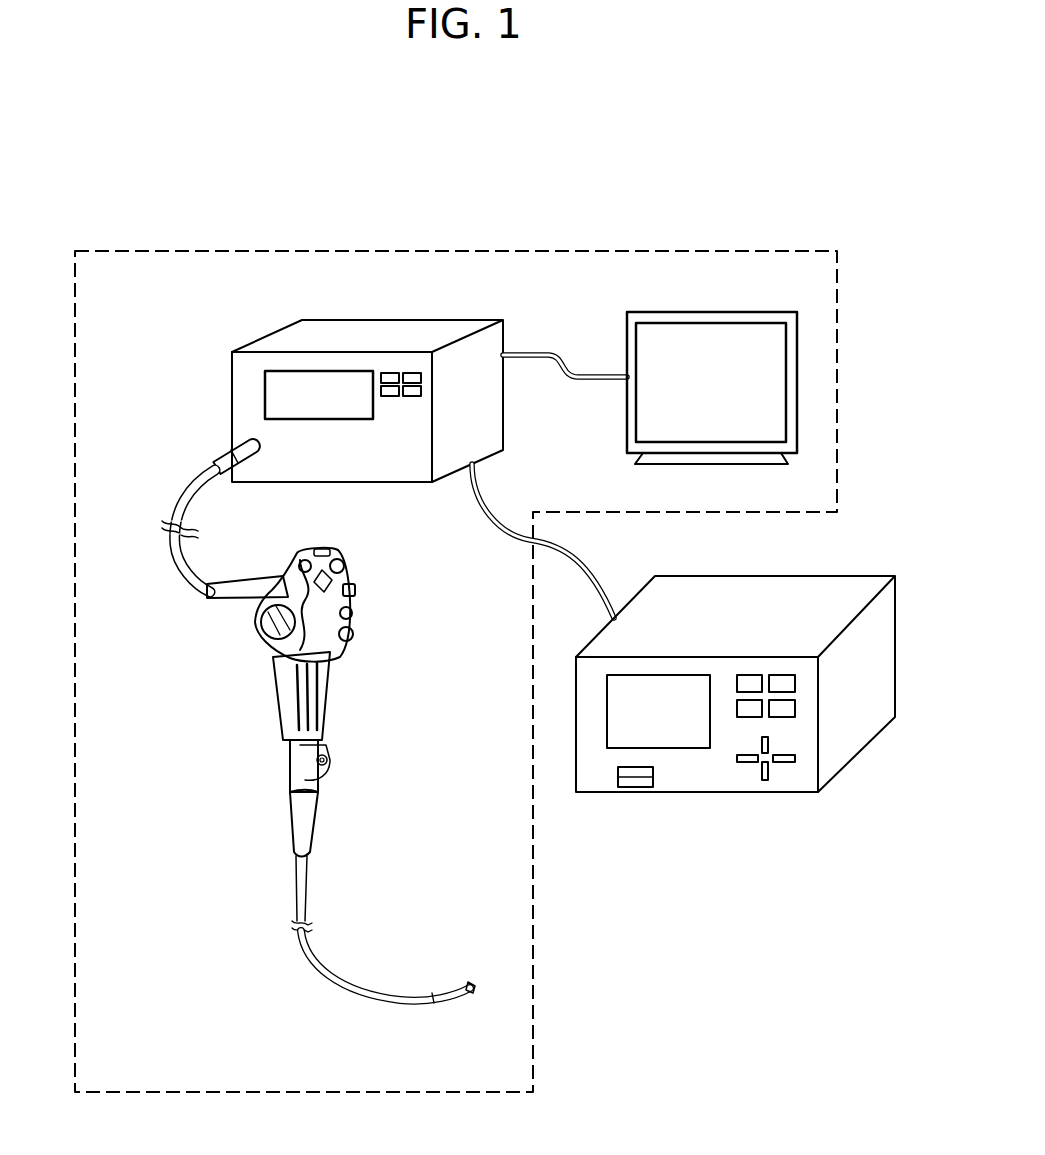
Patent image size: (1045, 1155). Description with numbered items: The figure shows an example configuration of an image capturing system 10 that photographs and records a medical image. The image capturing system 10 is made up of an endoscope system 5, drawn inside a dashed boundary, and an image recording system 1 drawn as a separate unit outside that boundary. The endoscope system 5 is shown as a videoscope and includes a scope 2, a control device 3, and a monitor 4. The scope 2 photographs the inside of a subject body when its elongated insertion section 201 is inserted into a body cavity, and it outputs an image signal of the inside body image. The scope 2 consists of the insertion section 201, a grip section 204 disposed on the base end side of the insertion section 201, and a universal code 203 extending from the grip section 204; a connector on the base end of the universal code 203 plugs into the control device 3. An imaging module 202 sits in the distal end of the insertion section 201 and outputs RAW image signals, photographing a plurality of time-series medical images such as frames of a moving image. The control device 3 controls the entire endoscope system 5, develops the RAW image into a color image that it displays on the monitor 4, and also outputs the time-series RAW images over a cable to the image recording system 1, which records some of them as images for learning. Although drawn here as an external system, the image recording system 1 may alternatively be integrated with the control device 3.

The image capturing system 10 is at (724, 188).
The endoscope system 5 is at (270, 250).
The control device 3 is at (479, 321).
The monitor 4 is at (712, 318).
The image recording system 1 is at (823, 592).
The scope 2 is at (383, 570).
The insertion section 201 is at (338, 984).
The imaging module 202 is at (466, 998).
The universal code 203 is at (170, 556).
The grip section 204 is at (330, 548).